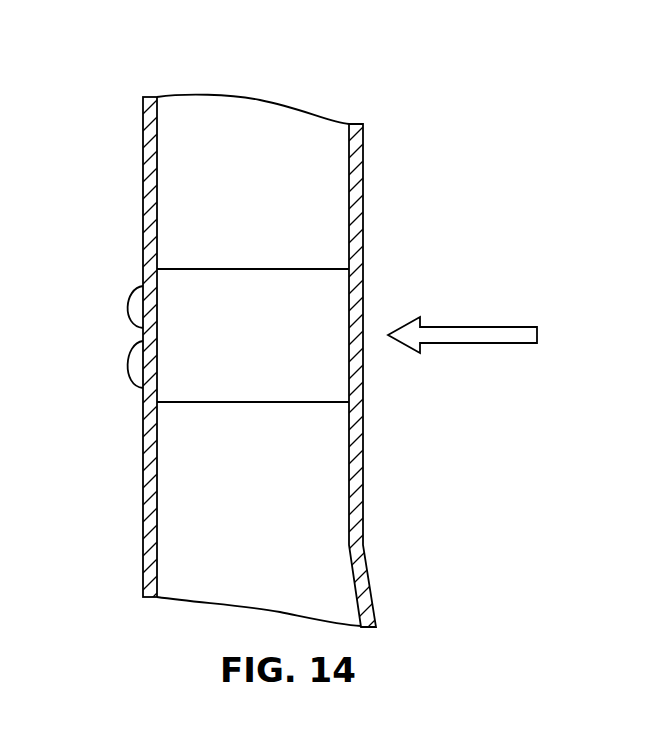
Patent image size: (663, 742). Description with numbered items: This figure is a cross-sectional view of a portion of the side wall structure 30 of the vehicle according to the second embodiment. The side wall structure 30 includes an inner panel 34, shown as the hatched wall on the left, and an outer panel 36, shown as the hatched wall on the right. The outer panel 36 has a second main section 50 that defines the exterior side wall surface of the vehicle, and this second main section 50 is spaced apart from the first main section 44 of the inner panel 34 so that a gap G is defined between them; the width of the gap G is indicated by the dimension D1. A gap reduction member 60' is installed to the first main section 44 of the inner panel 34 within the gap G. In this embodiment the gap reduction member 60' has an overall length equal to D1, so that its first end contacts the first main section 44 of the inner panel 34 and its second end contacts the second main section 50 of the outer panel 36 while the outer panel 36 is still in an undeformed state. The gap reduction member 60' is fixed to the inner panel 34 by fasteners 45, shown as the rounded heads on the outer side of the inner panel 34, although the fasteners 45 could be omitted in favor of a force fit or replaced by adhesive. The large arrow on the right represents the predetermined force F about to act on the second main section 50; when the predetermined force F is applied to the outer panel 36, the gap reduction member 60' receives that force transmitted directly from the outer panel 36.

The side wall structure 30 is at (318, 94).
The inner panel 34 is at (143, 168).
The outer panel 36 is at (363, 173).
The gap reduction member 60' is at (253, 240).
The second main section 50 is at (357, 375).
The fasteners 45 is at (128, 298).
The first main section 44 is at (143, 422).
The gap G is at (313, 428).
The width of the gap D1 is at (158, 470).
The predetermined force F is at (476, 335).